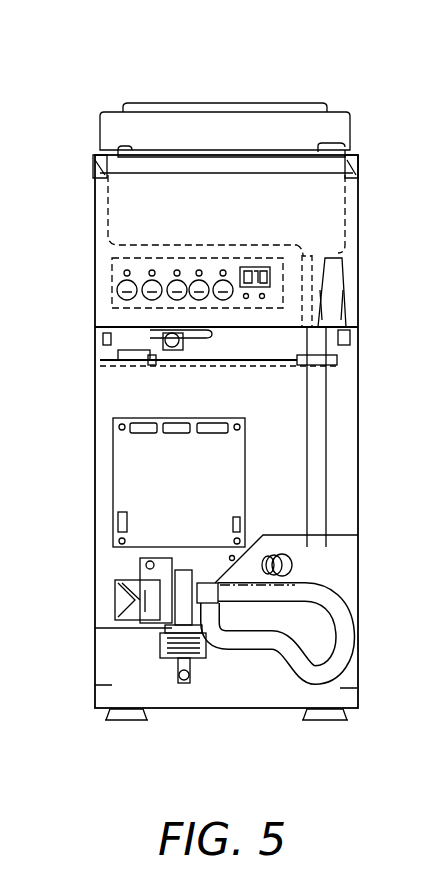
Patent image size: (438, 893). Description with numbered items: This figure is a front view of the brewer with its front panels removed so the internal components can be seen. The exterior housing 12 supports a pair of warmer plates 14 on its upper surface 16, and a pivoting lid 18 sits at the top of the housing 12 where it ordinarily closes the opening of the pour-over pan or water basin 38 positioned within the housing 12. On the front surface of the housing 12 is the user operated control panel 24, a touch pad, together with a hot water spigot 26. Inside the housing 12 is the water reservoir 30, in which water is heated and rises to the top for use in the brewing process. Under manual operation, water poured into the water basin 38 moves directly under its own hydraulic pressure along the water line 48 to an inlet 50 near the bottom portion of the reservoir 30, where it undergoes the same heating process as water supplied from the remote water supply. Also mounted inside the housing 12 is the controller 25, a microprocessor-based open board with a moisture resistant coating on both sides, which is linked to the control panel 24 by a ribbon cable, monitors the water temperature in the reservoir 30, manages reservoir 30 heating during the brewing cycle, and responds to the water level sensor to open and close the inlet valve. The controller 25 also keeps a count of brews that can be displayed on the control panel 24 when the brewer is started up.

The housing 12 is at (358, 418).
The warmer plates 14 is at (313, 108).
The upper surface 16 is at (348, 112).
The pivoting lid 18 is at (322, 143).
The user operated control panel 24 is at (117, 290).
The controller 25 is at (130, 497).
The hot water spigot 26 is at (365, 297).
The water reservoir 30 is at (297, 400).
The water basin 38 is at (330, 222).
The water line 48 is at (318, 518).
The inlet 50 is at (293, 570).